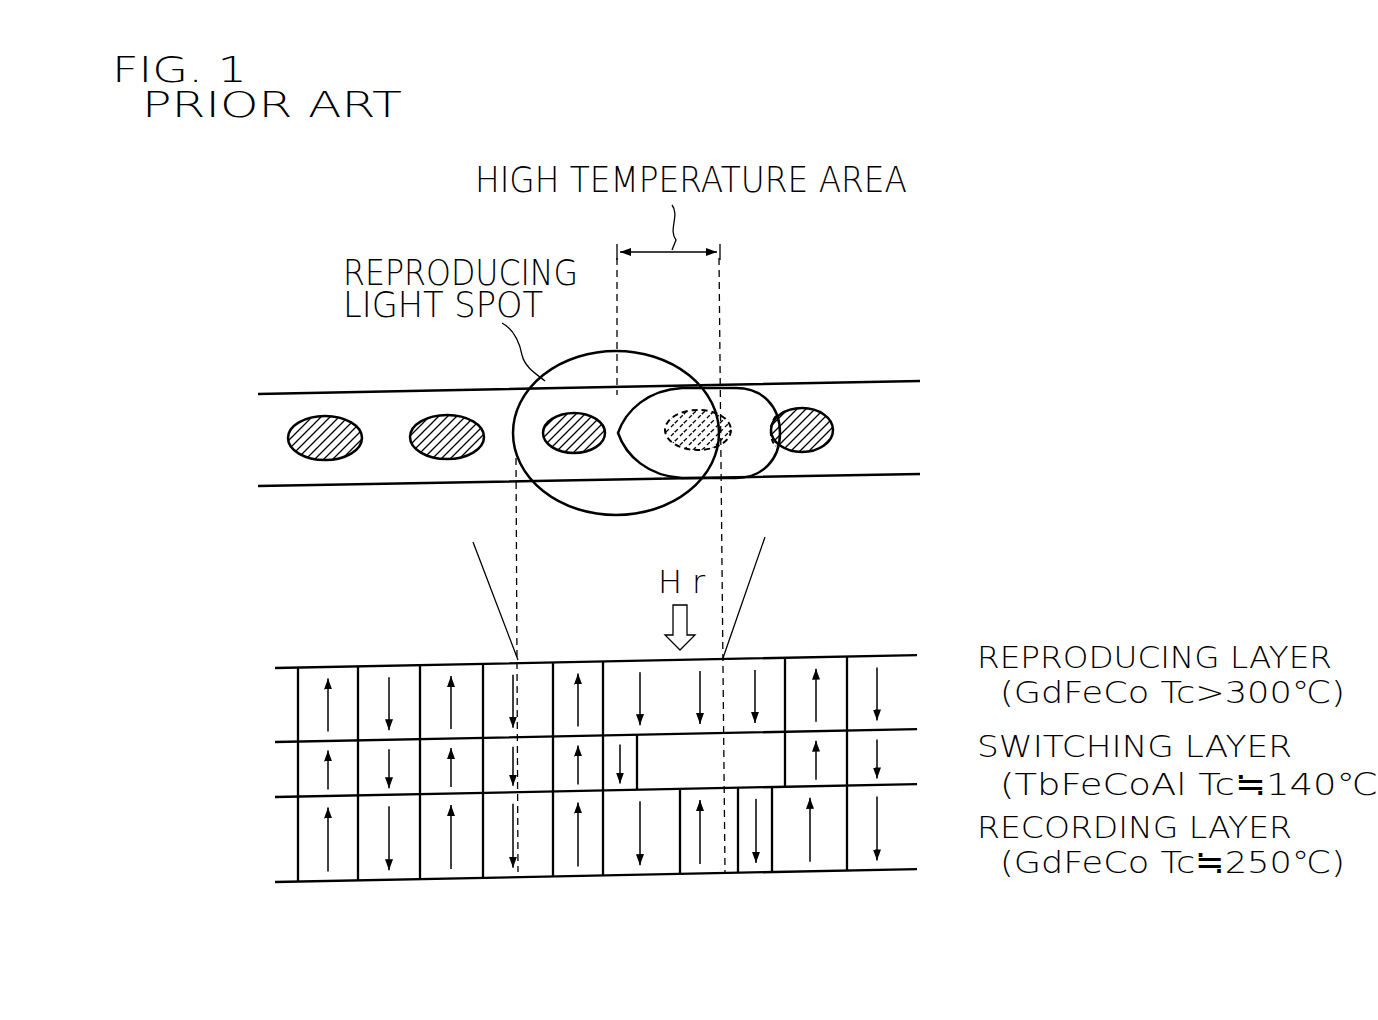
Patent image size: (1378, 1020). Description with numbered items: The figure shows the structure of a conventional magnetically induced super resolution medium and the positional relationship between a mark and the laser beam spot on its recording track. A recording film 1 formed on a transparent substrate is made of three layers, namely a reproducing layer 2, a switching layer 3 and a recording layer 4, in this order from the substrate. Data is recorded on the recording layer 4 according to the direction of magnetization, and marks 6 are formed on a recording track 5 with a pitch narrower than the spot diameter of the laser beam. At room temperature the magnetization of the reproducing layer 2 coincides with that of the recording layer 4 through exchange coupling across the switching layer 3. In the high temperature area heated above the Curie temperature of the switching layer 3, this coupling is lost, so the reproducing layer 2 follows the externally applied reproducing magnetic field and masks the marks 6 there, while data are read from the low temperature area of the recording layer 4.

The recording film 1 is at (932, 646).
The reproducing layer 2 is at (311, 712).
The switching layer 3 is at (313, 778).
The recording layer 4 is at (316, 845).
The recording track 5 is at (887, 398).
The marks 6 is at (422, 418).